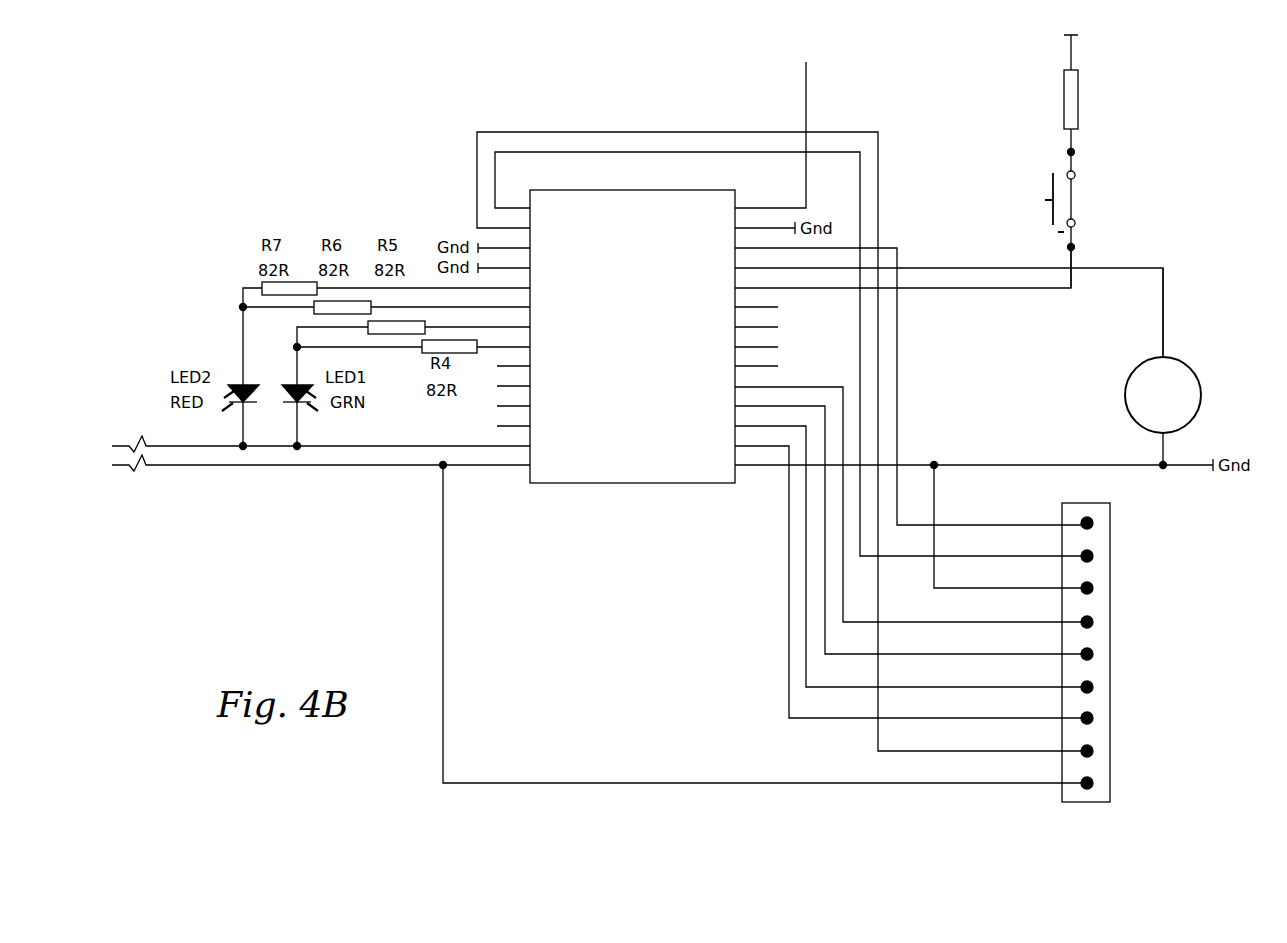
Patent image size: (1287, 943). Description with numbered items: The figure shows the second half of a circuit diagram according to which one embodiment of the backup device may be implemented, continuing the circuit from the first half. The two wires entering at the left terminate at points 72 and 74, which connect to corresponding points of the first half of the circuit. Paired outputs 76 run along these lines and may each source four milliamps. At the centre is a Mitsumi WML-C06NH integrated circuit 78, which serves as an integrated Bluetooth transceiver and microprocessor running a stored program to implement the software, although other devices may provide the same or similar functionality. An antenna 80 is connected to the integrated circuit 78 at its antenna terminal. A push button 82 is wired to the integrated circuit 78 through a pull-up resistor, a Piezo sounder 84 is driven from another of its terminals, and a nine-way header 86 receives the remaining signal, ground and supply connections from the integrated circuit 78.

The connection point 72 is at (150, 470).
The connection point 74 is at (150, 440).
The paired outputs 76 is at (674, 623).
The integrated circuit 78 is at (637, 483).
The antenna 80 is at (808, 100).
The push button 82 is at (1052, 190).
The sounder 84 is at (1192, 363).
The 9-way header 86 is at (1110, 728).